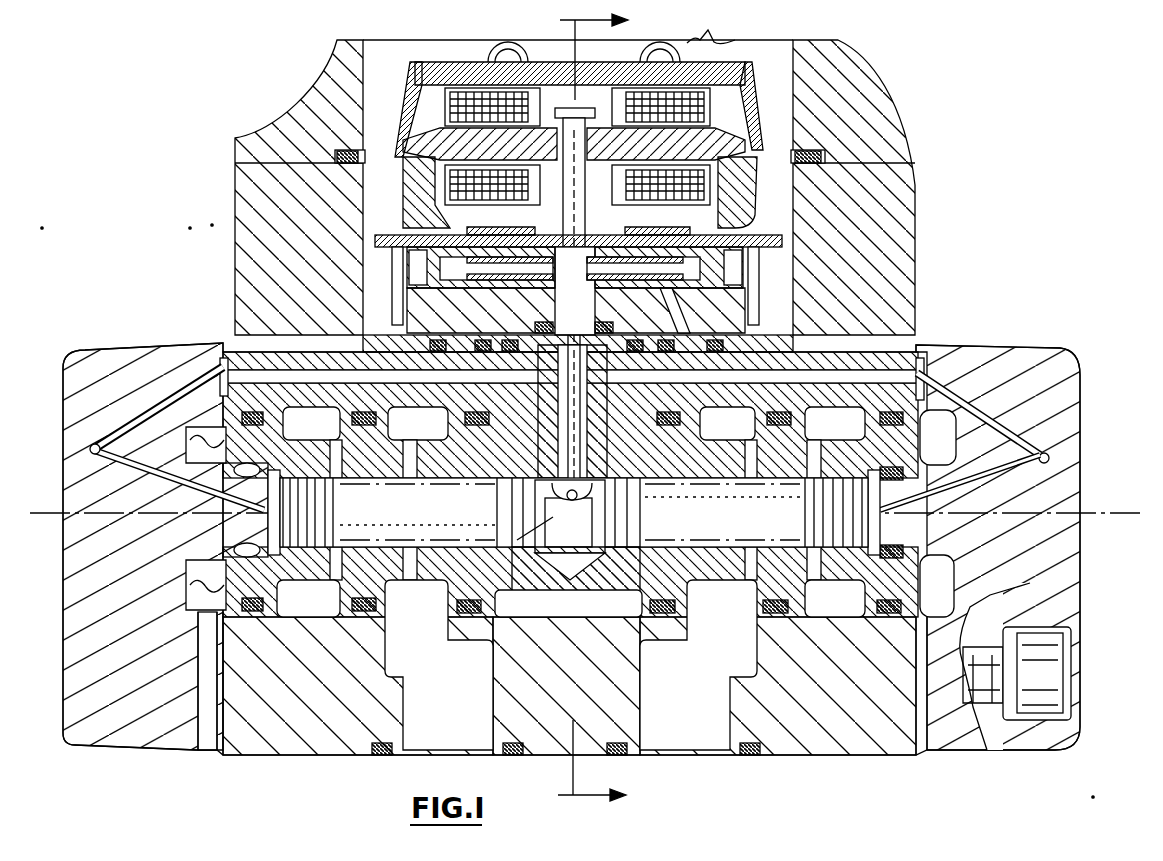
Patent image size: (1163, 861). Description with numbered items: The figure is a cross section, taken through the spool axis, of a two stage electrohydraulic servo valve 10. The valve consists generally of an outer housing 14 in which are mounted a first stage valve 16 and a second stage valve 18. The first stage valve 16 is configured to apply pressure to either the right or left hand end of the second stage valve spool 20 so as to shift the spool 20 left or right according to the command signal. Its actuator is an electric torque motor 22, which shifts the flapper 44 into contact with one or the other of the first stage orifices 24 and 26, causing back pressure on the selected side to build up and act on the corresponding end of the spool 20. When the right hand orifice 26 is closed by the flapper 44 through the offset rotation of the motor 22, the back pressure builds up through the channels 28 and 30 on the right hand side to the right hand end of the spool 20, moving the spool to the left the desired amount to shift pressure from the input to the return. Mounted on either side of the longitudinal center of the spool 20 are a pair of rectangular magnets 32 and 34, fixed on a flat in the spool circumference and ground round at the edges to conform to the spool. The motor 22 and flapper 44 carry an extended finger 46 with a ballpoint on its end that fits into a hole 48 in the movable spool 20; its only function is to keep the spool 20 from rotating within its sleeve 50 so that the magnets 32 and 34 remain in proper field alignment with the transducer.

The two stage electrohydraulic servo valve 10 is at (942, 232).
The outer housing 14 is at (995, 355).
The first stage valve 16 is at (783, 305).
The second stage valve 18 is at (1040, 562).
The second stage valve spool 20 is at (700, 513).
The electric torque motor 22 is at (731, 75).
The first stage orifice 24 is at (440, 230).
The first stage orifice 26 is at (705, 230).
The channel 28 is at (705, 349).
The channel 30 is at (1062, 425).
The rectangular magnet 32 is at (450, 598).
The rectangular magnet 34 is at (583, 517).
The flapper 44 is at (576, 128).
The extended finger 46 is at (555, 403).
The hole 48 is at (563, 487).
The sleeve 50 is at (341, 589).